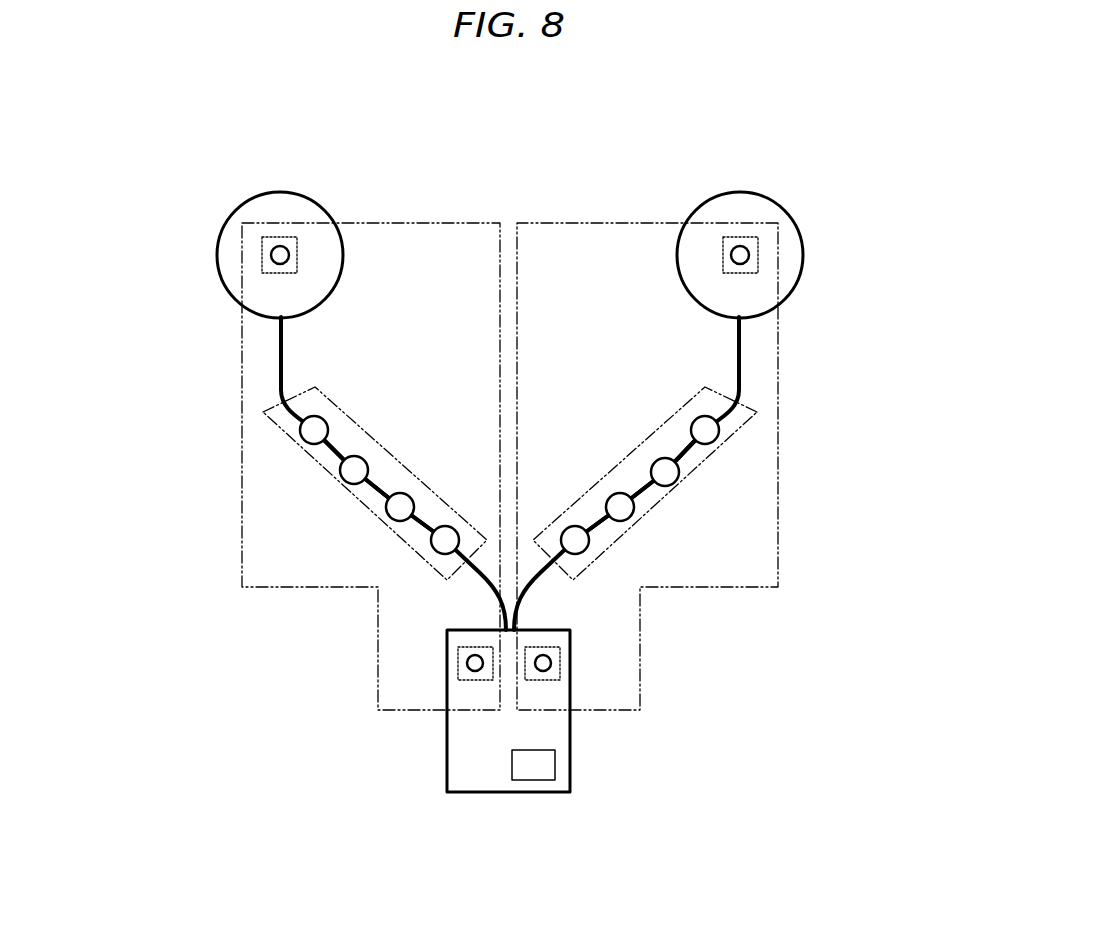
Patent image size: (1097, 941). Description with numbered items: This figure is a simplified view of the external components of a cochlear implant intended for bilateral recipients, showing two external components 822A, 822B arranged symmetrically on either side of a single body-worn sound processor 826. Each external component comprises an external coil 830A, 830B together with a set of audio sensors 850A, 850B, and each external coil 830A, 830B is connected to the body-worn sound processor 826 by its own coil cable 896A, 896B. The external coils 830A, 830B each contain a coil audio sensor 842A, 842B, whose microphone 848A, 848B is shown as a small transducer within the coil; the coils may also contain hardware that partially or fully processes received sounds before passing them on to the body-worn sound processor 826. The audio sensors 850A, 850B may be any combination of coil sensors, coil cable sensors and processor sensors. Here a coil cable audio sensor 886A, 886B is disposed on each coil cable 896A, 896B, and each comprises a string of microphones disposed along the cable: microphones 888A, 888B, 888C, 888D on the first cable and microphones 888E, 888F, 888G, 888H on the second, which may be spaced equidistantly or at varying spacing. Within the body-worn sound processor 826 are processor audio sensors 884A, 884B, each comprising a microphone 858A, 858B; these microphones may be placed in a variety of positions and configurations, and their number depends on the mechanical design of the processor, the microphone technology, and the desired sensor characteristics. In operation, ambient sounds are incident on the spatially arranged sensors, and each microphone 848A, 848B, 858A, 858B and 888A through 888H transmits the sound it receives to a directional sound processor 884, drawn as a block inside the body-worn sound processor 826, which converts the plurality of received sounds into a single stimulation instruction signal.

The external component 822A is at (312, 119).
The external component 822B is at (708, 119).
The external coil 830A is at (302, 198).
The external coil 830B is at (718, 198).
The microphone 848A is at (271, 252).
The microphone 848B is at (749, 256).
The coil audio sensor 842A is at (271, 260).
The coil audio sensor 842B is at (749, 262).
The coil cable 896A is at (283, 370).
The coil cable 896B is at (737, 370).
The audio sensors 850A is at (242, 531).
The audio sensors 850B is at (778, 531).
The coil cable audio sensor 886A is at (377, 526).
The coil cable audio sensor 886B is at (643, 526).
The microphone 888A is at (314, 428).
The microphone 888B is at (355, 468).
The microphone 888C is at (400, 506).
The microphone 888D is at (445, 539).
The microphone 888E is at (575, 539).
The microphone 888F is at (620, 506).
The microphone 888G is at (665, 471).
The microphone 888H is at (705, 429).
The processor audio sensor 884A is at (467, 661).
The processor audio sensor 884B is at (553, 661).
The microphone 858A is at (472, 667).
The microphone 858B is at (548, 668).
The directional sound processor 884 is at (521, 762).
The body-worn sound processor 826 is at (523, 793).